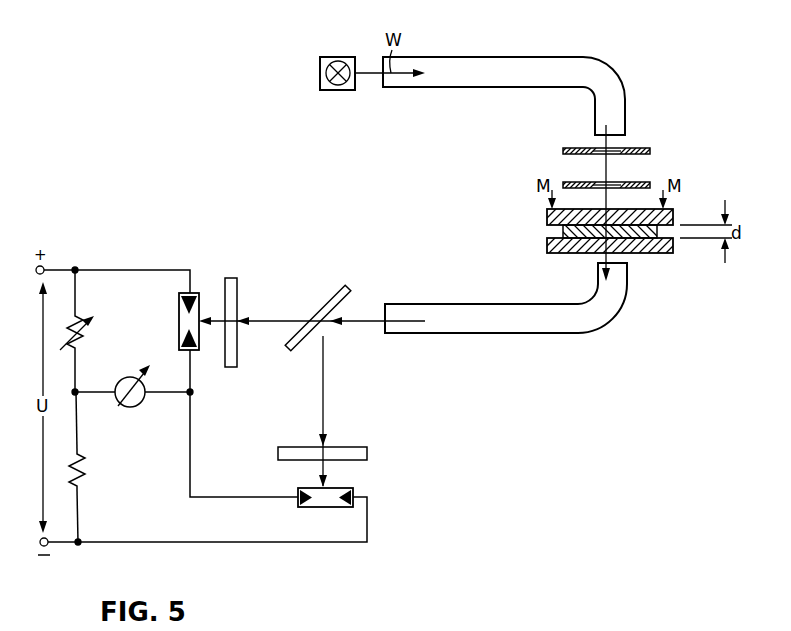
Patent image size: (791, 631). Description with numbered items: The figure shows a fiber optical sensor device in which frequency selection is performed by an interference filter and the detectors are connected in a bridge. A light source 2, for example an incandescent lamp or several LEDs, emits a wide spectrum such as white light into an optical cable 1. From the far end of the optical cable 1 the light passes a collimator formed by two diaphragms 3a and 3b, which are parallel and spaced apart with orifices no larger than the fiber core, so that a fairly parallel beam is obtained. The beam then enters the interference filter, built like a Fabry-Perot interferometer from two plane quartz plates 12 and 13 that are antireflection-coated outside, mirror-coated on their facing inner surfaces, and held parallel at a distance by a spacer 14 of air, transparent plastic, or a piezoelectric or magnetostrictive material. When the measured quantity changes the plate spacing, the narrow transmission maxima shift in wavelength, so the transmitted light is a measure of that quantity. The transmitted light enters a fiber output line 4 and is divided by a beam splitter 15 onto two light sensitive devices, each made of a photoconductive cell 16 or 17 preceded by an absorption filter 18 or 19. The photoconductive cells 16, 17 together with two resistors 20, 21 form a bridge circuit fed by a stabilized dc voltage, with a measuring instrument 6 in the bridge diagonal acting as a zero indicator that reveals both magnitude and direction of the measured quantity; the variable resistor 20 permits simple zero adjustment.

The optical cable 1 is at (495, 57).
The light source 2 is at (339, 57).
The diaphragm 3a is at (652, 151).
The diaphragm 3b is at (652, 185).
The fiber output line 4 is at (496, 327).
The measuring instrument 6 is at (136, 410).
The quartz plate 12 is at (547, 217).
The quartz plate 13 is at (547, 247).
The spacer 14 is at (565, 232).
The beam splitter 15 is at (327, 301).
The photoconductive cell 16 is at (180, 308).
The photoconductive cell 17 is at (356, 490).
The absorption filter 18 is at (238, 281).
The absorption filter 19 is at (368, 452).
The variable resistor 20 is at (88, 334).
The resistor 21 is at (85, 470).